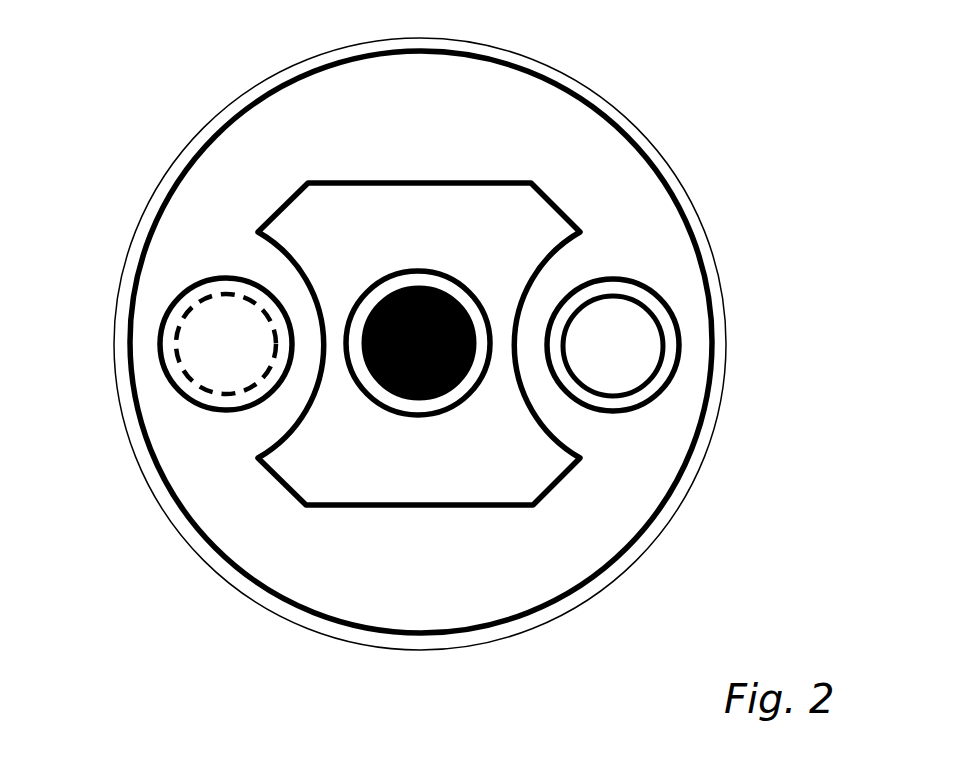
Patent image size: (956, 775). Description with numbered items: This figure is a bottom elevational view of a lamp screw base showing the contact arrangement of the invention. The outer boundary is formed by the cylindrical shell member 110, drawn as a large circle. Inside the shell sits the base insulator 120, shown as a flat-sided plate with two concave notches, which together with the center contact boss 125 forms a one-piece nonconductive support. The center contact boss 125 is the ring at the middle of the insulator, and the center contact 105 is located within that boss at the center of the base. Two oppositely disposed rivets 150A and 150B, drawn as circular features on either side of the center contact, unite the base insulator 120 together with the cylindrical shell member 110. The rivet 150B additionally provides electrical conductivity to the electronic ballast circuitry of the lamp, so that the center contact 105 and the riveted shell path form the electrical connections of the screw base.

The center contact 105 is at (455, 295).
The cylindrical shell member 110 is at (713, 445).
The base insulator 120 is at (285, 195).
The center contact boss 125 is at (421, 270).
The rivet 150A is at (197, 302).
The rivet 150B is at (665, 303).